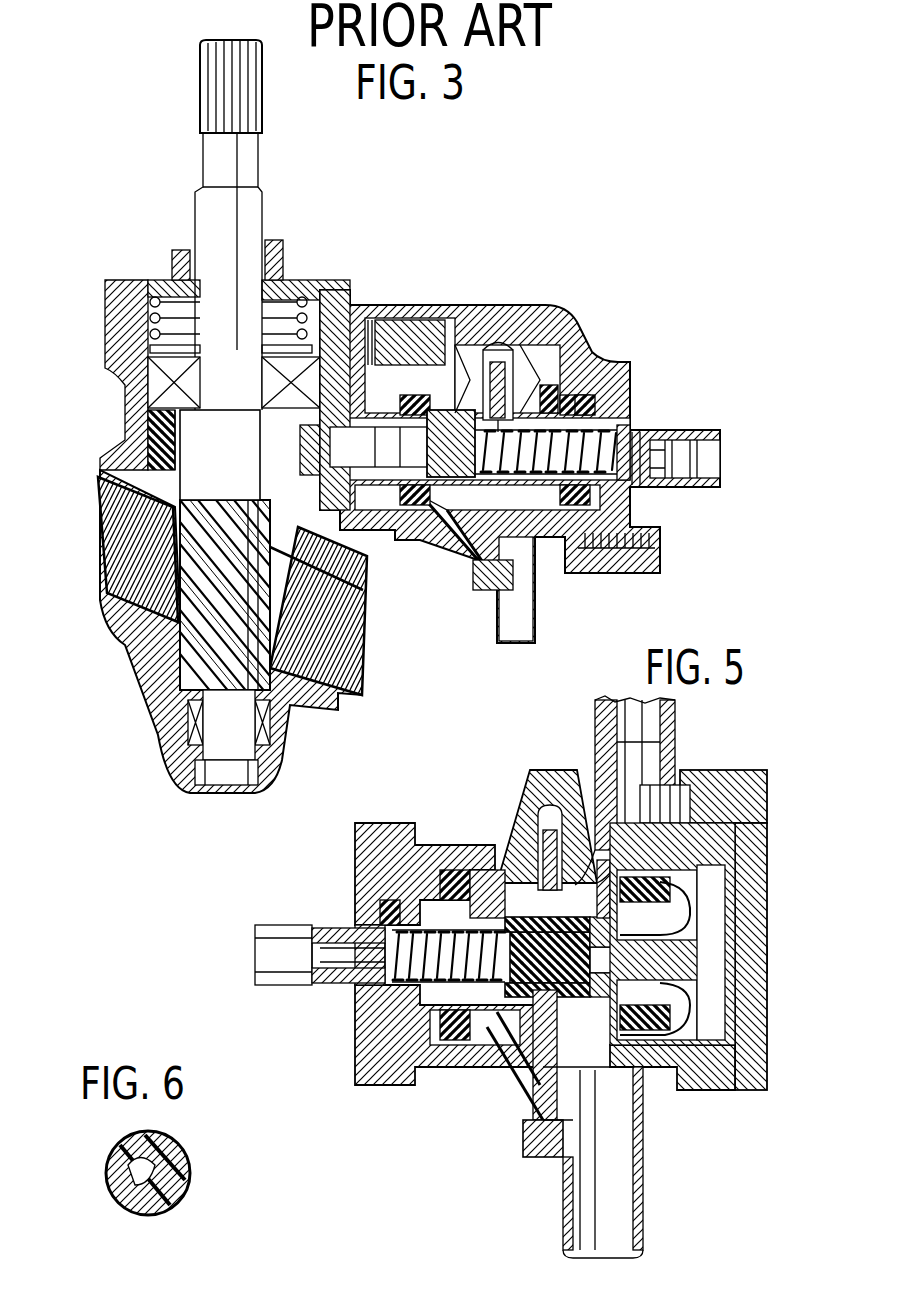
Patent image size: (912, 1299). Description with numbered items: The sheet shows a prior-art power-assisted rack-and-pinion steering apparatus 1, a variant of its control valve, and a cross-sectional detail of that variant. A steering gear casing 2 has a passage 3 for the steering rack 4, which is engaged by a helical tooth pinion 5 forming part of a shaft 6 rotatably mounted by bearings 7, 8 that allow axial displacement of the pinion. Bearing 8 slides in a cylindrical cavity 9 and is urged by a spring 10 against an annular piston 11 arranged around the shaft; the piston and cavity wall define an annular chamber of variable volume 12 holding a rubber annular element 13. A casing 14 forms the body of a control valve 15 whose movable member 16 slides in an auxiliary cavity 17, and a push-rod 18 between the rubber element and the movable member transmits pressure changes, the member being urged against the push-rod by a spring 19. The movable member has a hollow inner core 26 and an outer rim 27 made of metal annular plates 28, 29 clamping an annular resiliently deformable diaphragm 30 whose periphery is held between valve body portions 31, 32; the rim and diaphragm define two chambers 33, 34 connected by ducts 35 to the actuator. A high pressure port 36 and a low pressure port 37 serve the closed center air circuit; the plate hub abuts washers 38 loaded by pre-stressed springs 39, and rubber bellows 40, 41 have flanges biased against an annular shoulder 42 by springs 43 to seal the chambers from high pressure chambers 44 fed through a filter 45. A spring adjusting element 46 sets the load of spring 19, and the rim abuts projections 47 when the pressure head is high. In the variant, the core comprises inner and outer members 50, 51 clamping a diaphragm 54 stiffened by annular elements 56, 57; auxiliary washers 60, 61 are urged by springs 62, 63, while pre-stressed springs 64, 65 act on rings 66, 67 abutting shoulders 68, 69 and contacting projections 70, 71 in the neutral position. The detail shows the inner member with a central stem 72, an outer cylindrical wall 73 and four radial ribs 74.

In FIG. 3, the power-assisted rack-and-pinion steering apparatus 1 is at (333, 238).
In FIG. 3, the steering gear casing 2 is at (115, 285).
In FIG. 3, the passage 3 is at (320, 705).
In FIG. 3, the steering rack 4 is at (140, 600).
In FIG. 3, the rack-engaging helical tooth pinion 5 is at (195, 630).
In FIG. 3, the shaft 6 is at (205, 215).
In FIG. 3, the bearing 7 is at (185, 727).
In FIG. 3, the bearing 8 is at (190, 370).
In FIG. 3, the cylindrical cavity 9 is at (165, 300).
In FIG. 3, the spring 10 is at (290, 292).
In FIG. 3, the annular piston 11 is at (182, 437).
In FIG. 3, the annular chamber of variable volume 12 is at (150, 418).
In FIG. 3, the rubber annular element 13 is at (160, 440).
In FIG. 3, the casing 14 is at (597, 577).
In FIG. 3, the control valve 15 is at (440, 515).
In FIG. 3, the movable member 16 is at (468, 525).
In FIG. 3, the auxiliary cavity 17 is at (450, 516).
In FIG. 3, the push-rod 18 is at (340, 447).
In FIG. 5, the push-rod 18 is at (710, 957).
In FIG. 3, the spring 19 is at (618, 455).
In FIG. 5, the spring 19 is at (340, 985).
In FIG. 3, the inner core 26 is at (620, 573).
In FIG. 3, the outer rim 27 is at (480, 528).
In FIG. 3, the metal annular plate 28 is at (485, 580).
In FIG. 3, the metal annular plate 29 is at (540, 540).
In FIG. 3, the annular resiliently deformable diaphragm 30 is at (520, 360).
In FIG. 3, the valve body portion 31 is at (470, 385).
In FIG. 5, the valve body portion 31 is at (430, 857).
In FIG. 3, the valve body portion 32 is at (508, 345).
In FIG. 5, the valve body portion 32 is at (647, 1068).
In FIG. 3, the chamber 33 is at (485, 360).
In FIG. 5, the chamber 33 is at (513, 897).
In FIG. 3, the chamber 34 is at (545, 510).
In FIG. 5, the chamber 34 is at (580, 857).
In FIG. 3, the duct 35 is at (510, 625).
In FIG. 5, the duct 35 is at (617, 1173).
In FIG. 3, the high pressure port 36 is at (392, 318).
In FIG. 5, the high pressure port 36 is at (633, 725).
In FIG. 3, the low pressure port 37 is at (692, 445).
In FIG. 5, the low pressure port 37 is at (258, 945).
In FIG. 3, the washer 38 is at (462, 372).
In FIG. 3, the pre-stressed spring 39 is at (370, 330).
In FIG. 3, the rubber bellows 40 is at (398, 520).
In FIG. 3, the rubber bellows 41 is at (580, 395).
In FIG. 5, the rubber bellows 41 is at (430, 913).
In FIG. 3, the annular shoulder 42 is at (343, 462).
In FIG. 3, the spring 43 is at (312, 318).
In FIG. 3, the high pressure chamber 44 is at (390, 457).
In FIG. 3, the filter 45 is at (410, 330).
In FIG. 3, the spring adjusting element 46 is at (645, 478).
In FIG. 5, the spring adjusting element 46 is at (335, 928).
In FIG. 3, the projections 47 is at (498, 380).
In FIG. 5, the inner member 50 is at (692, 940).
In FIG. 6, the inner member 50 is at (180, 1138).
In FIG. 5, the outer member 51 is at (640, 985).
In FIG. 5, the resiliently deformable diaphragm 54 is at (550, 805).
In FIG. 5, the annular element 56 is at (548, 1080).
In FIG. 5, the annular element 57 is at (555, 1090).
In FIG. 5, the auxiliary washer 60 is at (522, 1057).
In FIG. 5, the auxiliary washer 61 is at (533, 1050).
In FIG. 5, the spring 62 is at (405, 1010).
In FIG. 5, the spring 63 is at (660, 1020).
In FIG. 5, the pre-stressed spring 64 is at (512, 1020).
In FIG. 5, the pre-stressed spring 65 is at (565, 1120).
In FIG. 5, the ring 66 is at (500, 865).
In FIG. 5, the ring 67 is at (655, 790).
In FIG. 5, the shoulder 68 is at (497, 1037).
In FIG. 5, the shoulder 69 is at (570, 1017).
In FIG. 5, the projection 70 is at (470, 845).
In FIG. 5, the projection 71 is at (580, 877).
In FIG. 6, the central stem 72 is at (170, 1162).
In FIG. 6, the outer cylindrical wall 73 is at (188, 1190).
In FIG. 6, the radial ribs 74 is at (130, 1197).